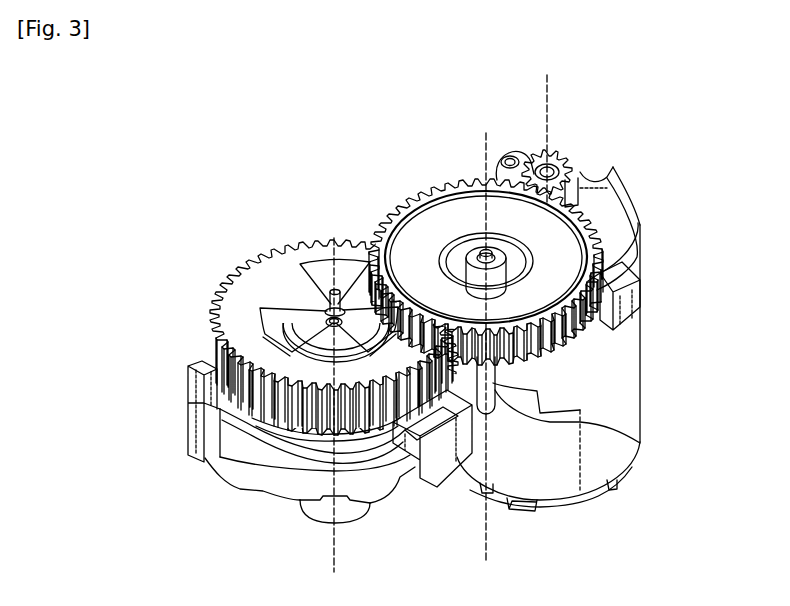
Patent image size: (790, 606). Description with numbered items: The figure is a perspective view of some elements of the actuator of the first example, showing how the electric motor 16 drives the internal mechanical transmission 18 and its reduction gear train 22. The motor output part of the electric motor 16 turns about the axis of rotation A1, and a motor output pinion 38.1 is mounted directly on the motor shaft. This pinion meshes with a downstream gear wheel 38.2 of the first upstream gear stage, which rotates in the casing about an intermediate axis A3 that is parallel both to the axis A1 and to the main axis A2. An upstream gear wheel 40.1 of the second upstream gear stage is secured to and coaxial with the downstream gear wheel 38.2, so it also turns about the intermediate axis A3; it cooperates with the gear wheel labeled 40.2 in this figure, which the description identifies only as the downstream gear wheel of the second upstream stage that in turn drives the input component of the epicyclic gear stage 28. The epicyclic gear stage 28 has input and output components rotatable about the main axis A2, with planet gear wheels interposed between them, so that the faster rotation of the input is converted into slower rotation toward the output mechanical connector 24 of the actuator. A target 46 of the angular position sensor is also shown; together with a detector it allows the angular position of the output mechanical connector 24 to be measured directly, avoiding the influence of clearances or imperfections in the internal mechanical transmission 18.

The internal mechanical transmission 18 is at (421, 208).
The reduction gear train 22 is at (370, 150).
The upstream gear wheel 40.1 is at (628, 440).
The second gear wheel 40.2 is at (216, 297).
The target 46 is at (322, 268).
The epicyclic gear stage 28 is at (167, 437).
The output mechanical connector 24 is at (322, 515).
The motor output pinion 38.1 is at (613, 167).
The downstream gear wheel 38.2 is at (638, 222).
The electric motor 16 is at (625, 368).
The axis of rotation A1 is at (549, 88).
The main axis A2 is at (336, 553).
The intermediate axis A3 is at (488, 537).